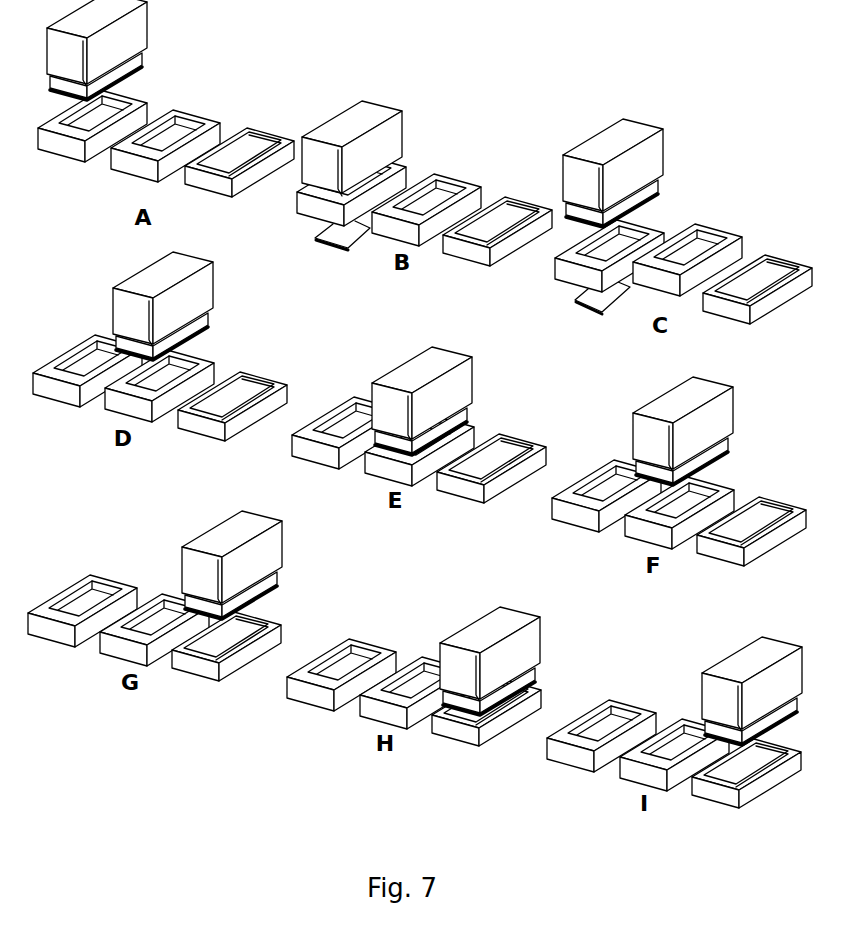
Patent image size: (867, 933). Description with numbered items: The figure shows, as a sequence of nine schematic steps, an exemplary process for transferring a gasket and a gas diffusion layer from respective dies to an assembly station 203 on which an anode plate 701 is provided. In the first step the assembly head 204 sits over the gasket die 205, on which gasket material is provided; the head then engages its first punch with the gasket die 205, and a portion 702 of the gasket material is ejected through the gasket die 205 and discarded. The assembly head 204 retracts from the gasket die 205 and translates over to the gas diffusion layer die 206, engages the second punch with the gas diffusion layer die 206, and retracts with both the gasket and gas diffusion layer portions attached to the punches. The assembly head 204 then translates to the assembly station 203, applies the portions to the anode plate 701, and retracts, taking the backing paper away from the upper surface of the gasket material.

The assembly station 203 is at (220, 185).
The assembly head 204 is at (133, 35).
The gasket die 205 is at (73, 153).
The gas diffusion layer die 206 is at (210, 117).
The anode plate 701 is at (267, 139).
The portion of the gasket material 702 is at (340, 238).